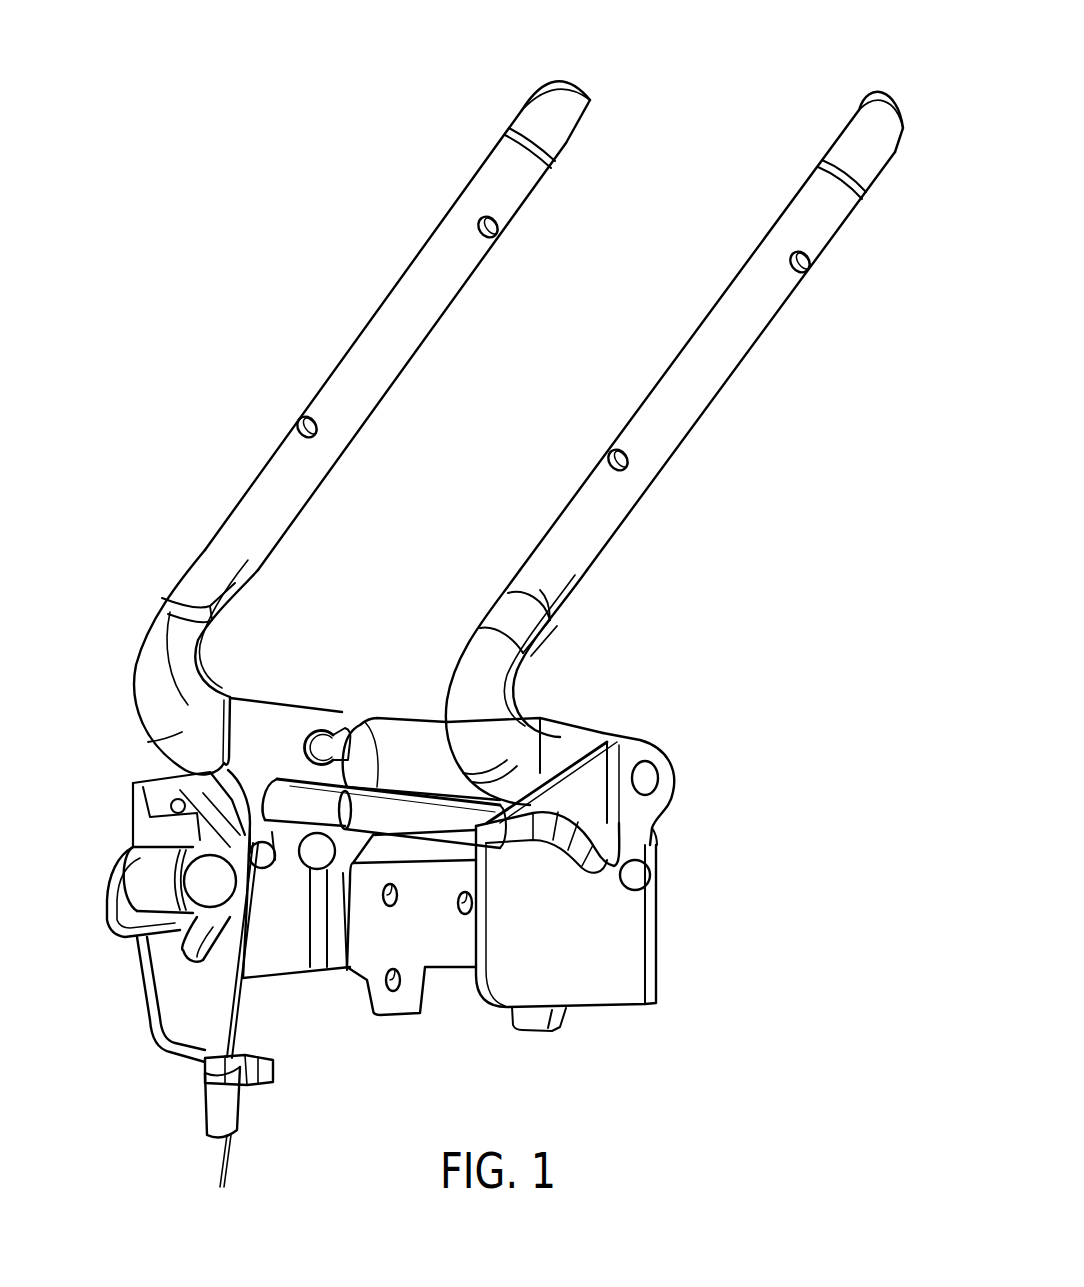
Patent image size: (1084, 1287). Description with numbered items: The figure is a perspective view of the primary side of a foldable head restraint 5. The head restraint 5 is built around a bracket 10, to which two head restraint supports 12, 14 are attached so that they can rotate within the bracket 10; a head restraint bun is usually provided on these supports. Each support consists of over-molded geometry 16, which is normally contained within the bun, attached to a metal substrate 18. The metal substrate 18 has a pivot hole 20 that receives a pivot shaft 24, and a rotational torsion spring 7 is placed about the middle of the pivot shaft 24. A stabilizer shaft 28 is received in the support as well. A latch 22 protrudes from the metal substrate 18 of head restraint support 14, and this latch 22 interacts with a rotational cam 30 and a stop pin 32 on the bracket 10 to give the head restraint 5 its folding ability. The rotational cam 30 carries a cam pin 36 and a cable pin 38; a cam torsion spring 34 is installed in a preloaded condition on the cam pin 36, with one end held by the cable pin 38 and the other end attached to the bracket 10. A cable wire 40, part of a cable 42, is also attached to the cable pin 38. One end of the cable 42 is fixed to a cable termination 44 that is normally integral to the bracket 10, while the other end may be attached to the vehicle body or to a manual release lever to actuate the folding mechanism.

The foldable head restraint 5 is at (690, 695).
The rotational torsion spring 7 is at (405, 733).
The bracket 10 is at (656, 937).
The head restraint support 12 is at (583, 75).
The head restraint support 14 is at (887, 99).
The over-molded geometry 16 is at (372, 330).
The metal substrate 18 is at (150, 705).
The pivot hole 20 is at (315, 732).
The latch 22 is at (283, 858).
The pivot shaft 24 is at (338, 740).
The stabilizer shaft 28 is at (293, 787).
The rotational cam 30 is at (167, 923).
The stop pin 32 is at (318, 858).
The cam torsion spring 34 is at (160, 887).
The cam pin 36 is at (192, 877).
The cable pin 38 is at (260, 808).
The cable wire 40 is at (242, 1010).
The cable 42 is at (208, 1108).
The cable termination 44 is at (273, 1078).